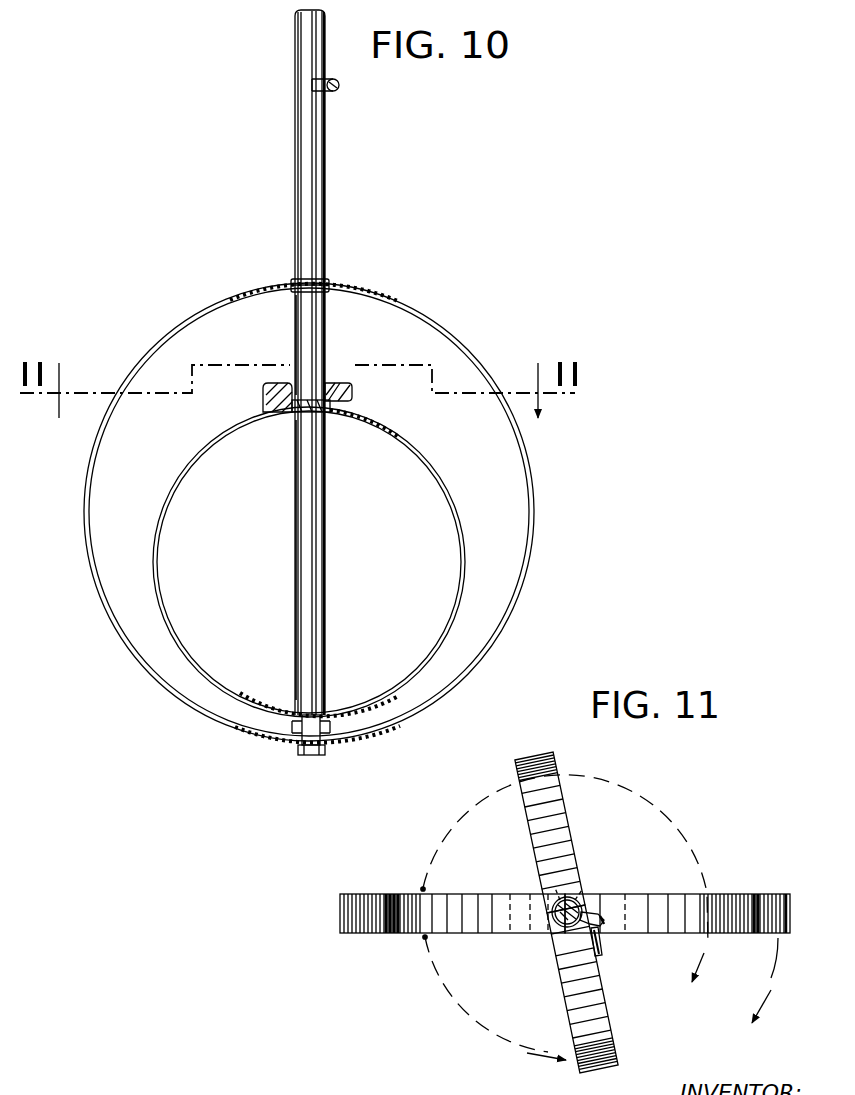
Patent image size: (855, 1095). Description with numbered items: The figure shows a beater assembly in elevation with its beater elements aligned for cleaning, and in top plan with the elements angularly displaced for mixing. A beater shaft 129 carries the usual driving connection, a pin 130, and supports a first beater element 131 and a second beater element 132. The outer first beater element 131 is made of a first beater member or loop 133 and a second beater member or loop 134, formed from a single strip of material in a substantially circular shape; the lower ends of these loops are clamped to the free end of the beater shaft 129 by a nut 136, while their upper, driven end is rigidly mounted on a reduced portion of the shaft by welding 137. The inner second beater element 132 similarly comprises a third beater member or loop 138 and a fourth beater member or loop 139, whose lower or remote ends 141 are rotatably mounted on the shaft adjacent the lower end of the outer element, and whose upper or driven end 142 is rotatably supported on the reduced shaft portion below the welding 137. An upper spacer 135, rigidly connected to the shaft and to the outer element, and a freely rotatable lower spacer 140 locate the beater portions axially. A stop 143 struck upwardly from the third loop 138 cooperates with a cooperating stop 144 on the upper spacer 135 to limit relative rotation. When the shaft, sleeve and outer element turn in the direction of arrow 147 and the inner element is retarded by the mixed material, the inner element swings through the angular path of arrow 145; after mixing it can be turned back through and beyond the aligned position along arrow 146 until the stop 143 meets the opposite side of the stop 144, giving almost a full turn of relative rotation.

In FIG. 10, the beater shaft 129 is at (316, 211).
In FIG. 11, the beater shaft 129 is at (577, 898).
In FIG. 10, the pin 130 is at (340, 84).
In FIG. 10, the first beater element 131 is at (307, 495).
In FIG. 11, the first beater element 131 is at (565, 908).
In FIG. 10, the second beater element 132 is at (309, 562).
In FIG. 11, the second beater element 132 is at (562, 912).
In FIG. 10, the first beater member or loop 133 is at (96, 437).
In FIG. 11, the first beater member or loop 133 is at (369, 926).
In FIG. 10, the second beater member or loop 134 is at (519, 452).
In FIG. 11, the second beater member or loop 134 is at (765, 895).
In FIG. 10, the upper spacer 135 is at (318, 342).
In FIG. 11, the upper spacer 135 is at (551, 905).
In FIG. 10, the nut 136 is at (330, 745).
In FIG. 10, the welding 137 is at (298, 284).
In FIG. 10, the third beater member or loop 138 is at (178, 612).
In FIG. 11, the third beater member or loop 138 is at (596, 1020).
In FIG. 10, the fourth beater member or loop 139 is at (455, 561).
In FIG. 11, the fourth beater member or loop 139 is at (560, 838).
In FIG. 10, the lower spacer 140 is at (317, 497).
In FIG. 10, the lower or remote ends 141 is at (297, 716).
In FIG. 10, the upper or driven end 142 is at (348, 410).
In FIG. 10, the stop 143 is at (265, 388).
In FIG. 11, the stop 143 is at (592, 945).
In FIG. 10, the cooperating stop 144 is at (352, 390).
In FIG. 11, the cooperating stop 144 is at (606, 926).
In FIG. 11, the arrow 145 is at (478, 1027).
In FIG. 11, the arrow 146 is at (498, 781).
In FIG. 11, the arrow 147 is at (782, 960).